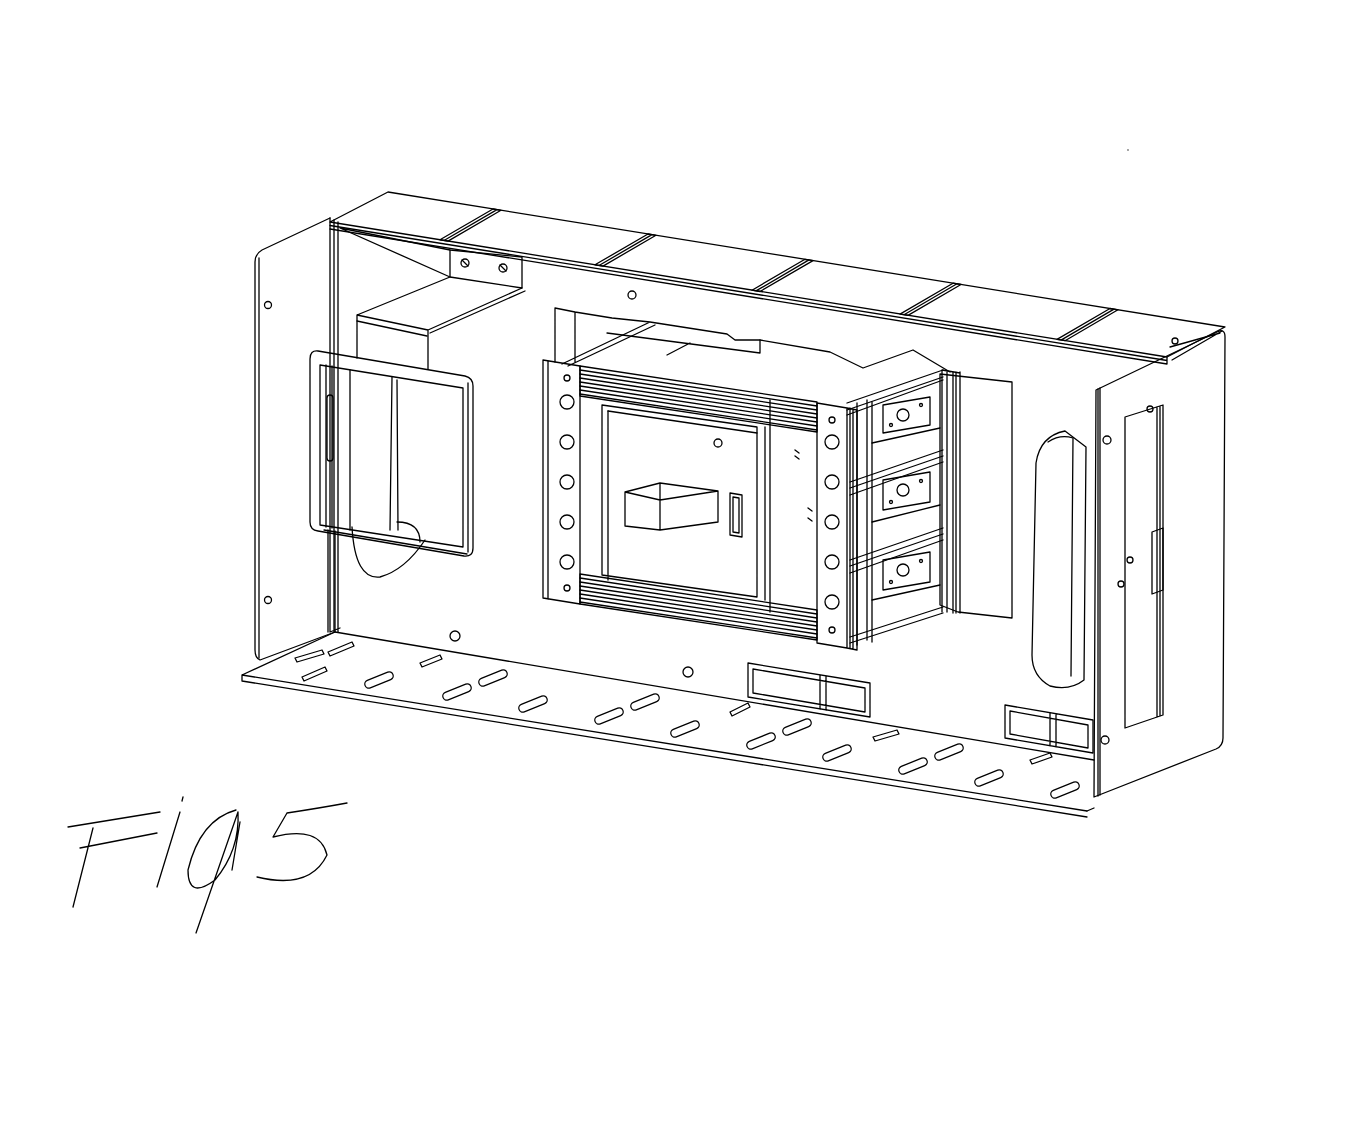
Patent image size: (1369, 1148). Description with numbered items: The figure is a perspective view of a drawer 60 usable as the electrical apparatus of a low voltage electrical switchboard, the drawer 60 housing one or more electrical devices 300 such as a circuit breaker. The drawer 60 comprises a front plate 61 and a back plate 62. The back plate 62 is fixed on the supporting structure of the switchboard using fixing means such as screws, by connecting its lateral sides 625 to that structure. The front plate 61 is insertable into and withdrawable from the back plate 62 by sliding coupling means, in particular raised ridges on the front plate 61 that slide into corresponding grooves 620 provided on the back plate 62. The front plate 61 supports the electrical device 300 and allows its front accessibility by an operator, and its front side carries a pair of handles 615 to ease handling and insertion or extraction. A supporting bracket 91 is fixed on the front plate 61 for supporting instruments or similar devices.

The drawer 60 is at (1141, 144).
The front plate 61 is at (373, 270).
The back plate 62 is at (693, 250).
The grooves 620 is at (452, 238).
The electrical device 300 is at (820, 395).
The supporting bracket 91 is at (378, 328).
The lateral sides 625 is at (262, 440).
The handles 615 is at (362, 473).